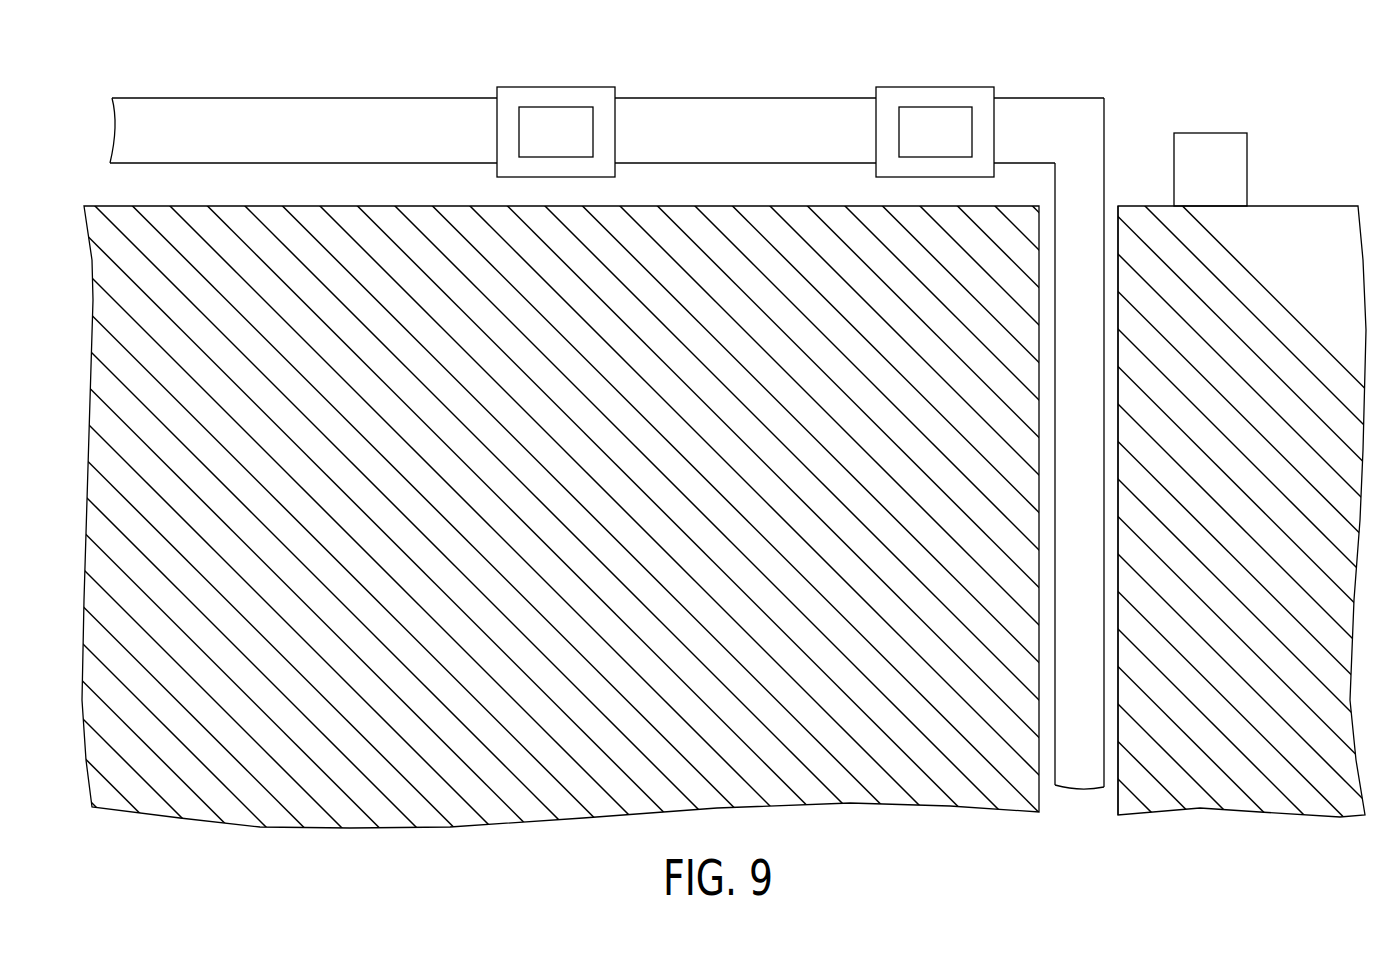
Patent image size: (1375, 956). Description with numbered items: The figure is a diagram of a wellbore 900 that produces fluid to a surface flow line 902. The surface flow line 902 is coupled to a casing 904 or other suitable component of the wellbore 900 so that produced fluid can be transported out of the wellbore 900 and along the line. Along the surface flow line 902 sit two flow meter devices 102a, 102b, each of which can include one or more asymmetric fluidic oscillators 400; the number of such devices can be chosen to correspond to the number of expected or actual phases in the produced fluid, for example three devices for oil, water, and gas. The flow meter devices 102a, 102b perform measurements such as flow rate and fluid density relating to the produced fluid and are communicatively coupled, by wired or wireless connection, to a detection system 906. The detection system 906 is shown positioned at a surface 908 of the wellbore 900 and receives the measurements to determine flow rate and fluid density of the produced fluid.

The flow meter device 102a is at (554, 87).
The flow meter device 102b is at (933, 87).
The surface flow line 902 is at (773, 98).
The asymmetric fluidic oscillator 400 is at (557, 157).
The detection system 906 is at (1210, 140).
The surface 908 is at (1319, 215).
The wellbore 900 is at (1120, 295).
The casing 904 is at (1104, 458).